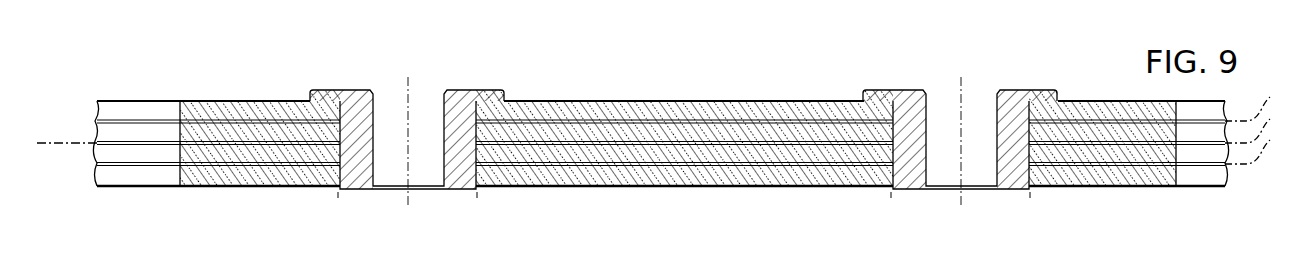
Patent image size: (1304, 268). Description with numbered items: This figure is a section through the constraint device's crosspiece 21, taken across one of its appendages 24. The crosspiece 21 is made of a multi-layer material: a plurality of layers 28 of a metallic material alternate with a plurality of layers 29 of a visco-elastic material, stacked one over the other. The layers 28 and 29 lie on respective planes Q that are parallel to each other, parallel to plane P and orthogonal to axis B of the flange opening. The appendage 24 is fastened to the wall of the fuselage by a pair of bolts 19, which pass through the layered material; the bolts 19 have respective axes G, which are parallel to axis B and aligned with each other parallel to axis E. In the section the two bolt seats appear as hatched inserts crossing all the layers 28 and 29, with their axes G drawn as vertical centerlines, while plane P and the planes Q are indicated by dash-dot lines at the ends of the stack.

The bolts 19 is at (458, 160).
The crosspiece 21 is at (713, 101).
The appendage 24 is at (618, 188).
The layers of metallic material 28 is at (550, 108).
The layers of visco-elastic material 29 is at (766, 160).
The axes of the bolts G is at (410, 112).
The plane P is at (60, 143).
The planes Q is at (1254, 123).